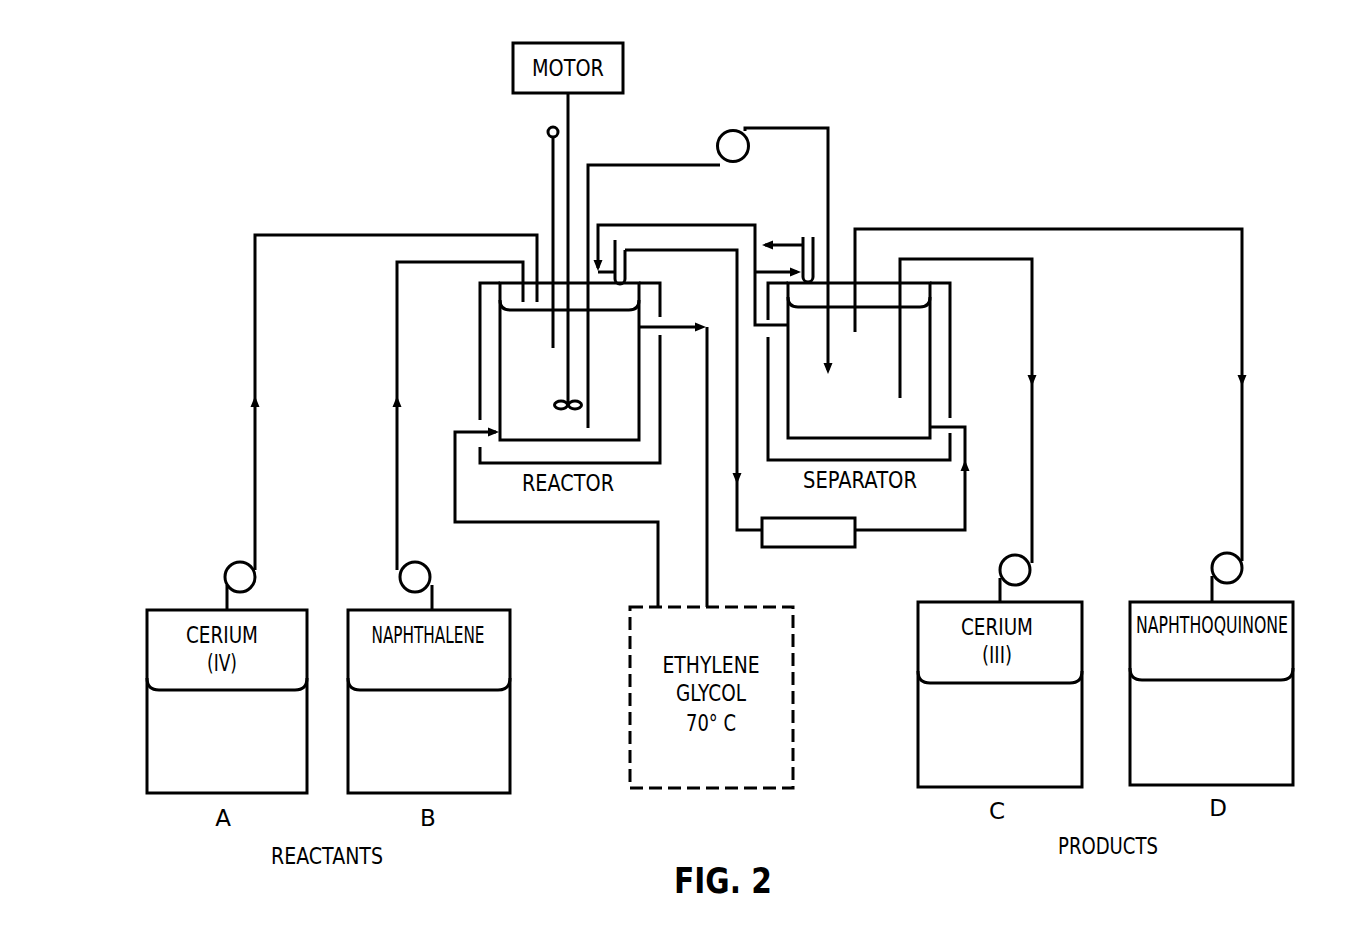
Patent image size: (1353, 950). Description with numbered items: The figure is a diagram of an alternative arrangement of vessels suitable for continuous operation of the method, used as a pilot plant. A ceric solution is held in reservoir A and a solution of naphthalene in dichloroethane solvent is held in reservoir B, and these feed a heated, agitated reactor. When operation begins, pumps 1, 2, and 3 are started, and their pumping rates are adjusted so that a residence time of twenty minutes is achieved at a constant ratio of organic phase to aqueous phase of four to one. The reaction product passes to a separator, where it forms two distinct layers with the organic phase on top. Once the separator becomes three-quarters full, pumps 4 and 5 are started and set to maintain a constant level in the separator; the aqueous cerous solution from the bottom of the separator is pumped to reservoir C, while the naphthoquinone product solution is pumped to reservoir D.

The pump 1 is at (330, 422).
The pump 2 is at (467, 436).
The pump 3 is at (761, 278).
The pump 4 is at (965, 430).
The pump 5 is at (1101, 415).